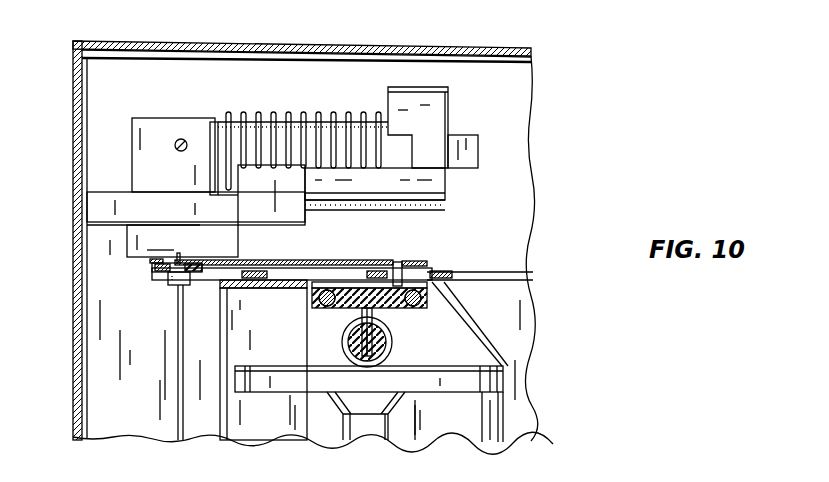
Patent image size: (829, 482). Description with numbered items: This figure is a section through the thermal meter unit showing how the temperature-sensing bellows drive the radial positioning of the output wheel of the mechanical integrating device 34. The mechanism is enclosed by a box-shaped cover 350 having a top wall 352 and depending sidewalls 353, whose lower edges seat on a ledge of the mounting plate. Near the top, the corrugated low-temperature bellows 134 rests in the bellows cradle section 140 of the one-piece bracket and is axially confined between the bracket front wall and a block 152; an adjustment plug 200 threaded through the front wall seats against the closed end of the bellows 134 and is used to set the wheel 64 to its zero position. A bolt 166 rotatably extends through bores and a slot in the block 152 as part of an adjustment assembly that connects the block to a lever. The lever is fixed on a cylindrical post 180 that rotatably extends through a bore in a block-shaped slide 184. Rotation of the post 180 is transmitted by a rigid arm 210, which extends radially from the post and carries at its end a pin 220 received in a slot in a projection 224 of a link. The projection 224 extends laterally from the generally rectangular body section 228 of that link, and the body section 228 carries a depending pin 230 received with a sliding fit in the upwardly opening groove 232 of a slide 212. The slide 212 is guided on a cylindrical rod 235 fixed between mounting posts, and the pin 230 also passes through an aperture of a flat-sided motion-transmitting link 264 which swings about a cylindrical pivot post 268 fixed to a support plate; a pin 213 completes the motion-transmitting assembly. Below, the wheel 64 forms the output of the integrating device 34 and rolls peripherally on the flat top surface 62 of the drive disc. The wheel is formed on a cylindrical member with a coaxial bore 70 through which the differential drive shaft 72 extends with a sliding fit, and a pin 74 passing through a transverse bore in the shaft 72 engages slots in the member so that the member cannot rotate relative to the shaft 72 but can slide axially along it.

The box-shaped cover 350 is at (300, 39).
The top wall 352 is at (398, 46).
The depending sidewalls 353 is at (73, 118).
The block 152 is at (151, 136).
The bolt 166 is at (183, 139).
The low-temperature bellows 134 is at (289, 113).
The bellows cradle section 140 is at (376, 148).
The adjustment plug 200 is at (478, 150).
The slide 184 is at (196, 211).
The pin 220 is at (184, 260).
The body section 228 is at (291, 262).
The groove 232 is at (345, 285).
The pin 230 is at (402, 262).
The motion-transmitting link 264 is at (486, 272).
The arm 210 is at (166, 272).
The projection 224 is at (219, 276).
The post 180 is at (176, 286).
The slide 212 is at (323, 301).
The pivot post 268 is at (226, 320).
The rod 235 is at (328, 314).
The pin 213 is at (359, 320).
The bore 70 is at (387, 340).
The pin 74 is at (354, 346).
The wheel 64 is at (392, 351).
The differential drive shaft 72 is at (357, 353).
The flat top surface 62 is at (273, 372).
The mechanical integrating device 34 is at (453, 394).